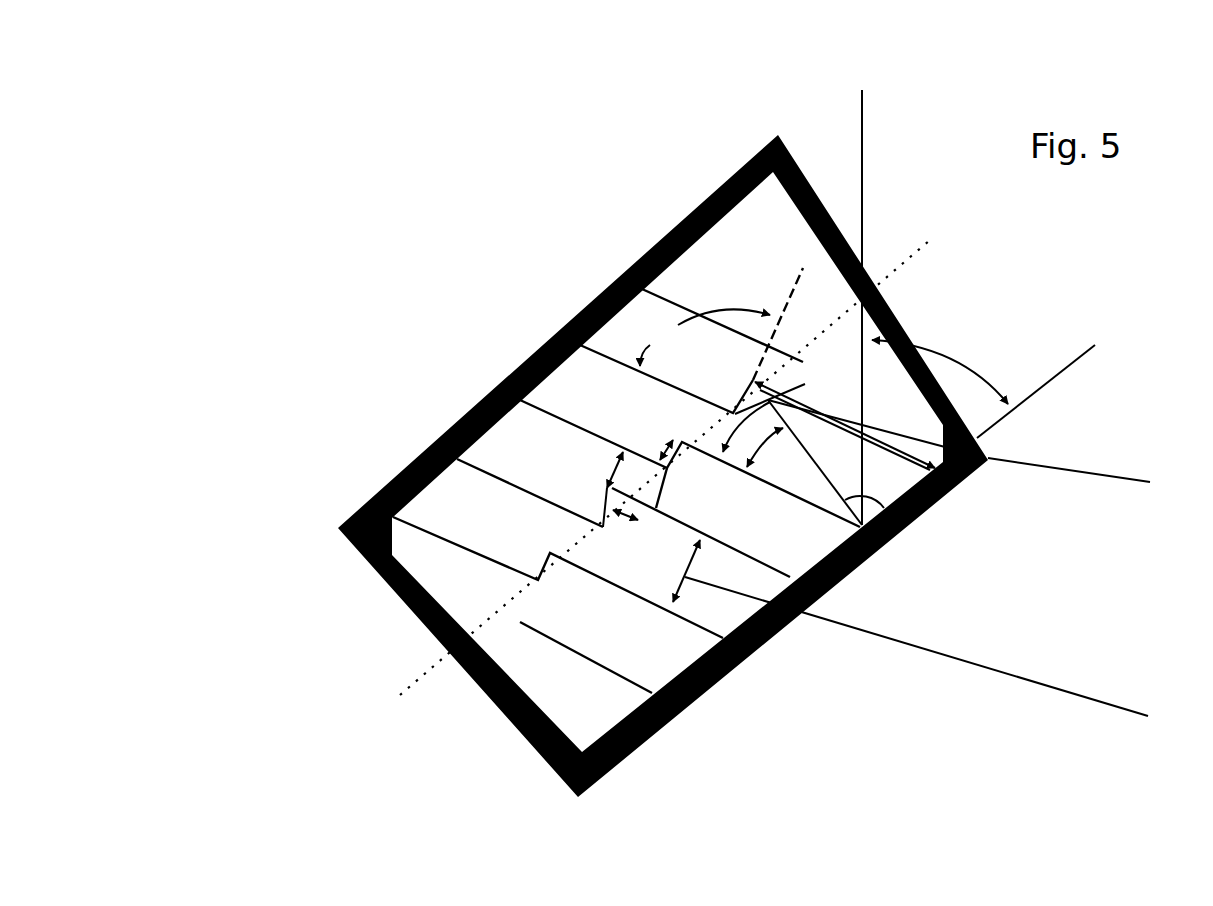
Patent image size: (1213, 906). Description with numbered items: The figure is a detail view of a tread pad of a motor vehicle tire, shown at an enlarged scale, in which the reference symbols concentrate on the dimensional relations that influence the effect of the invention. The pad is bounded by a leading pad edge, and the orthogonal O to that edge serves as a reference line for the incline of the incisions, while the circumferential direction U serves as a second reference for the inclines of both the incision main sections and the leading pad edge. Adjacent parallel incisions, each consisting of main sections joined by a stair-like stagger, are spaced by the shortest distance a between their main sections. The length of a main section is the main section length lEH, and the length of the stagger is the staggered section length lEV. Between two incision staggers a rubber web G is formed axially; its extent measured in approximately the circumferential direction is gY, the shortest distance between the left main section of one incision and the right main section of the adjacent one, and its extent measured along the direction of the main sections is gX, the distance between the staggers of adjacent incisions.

The rubber web G is at (667, 473).
The length of rubber web G in approximately the axial direction gX is at (610, 526).
The length of rubber web G in approximately the circumferential direction gY is at (665, 490).
The staggered section length lEV is at (662, 450).
The main section length lEH is at (1091, 489).
The distance between two adjacent incisions a is at (937, 657).
The circumferential direction U is at (864, 295).
The orthogonal to leading pad edge O is at (920, 517).